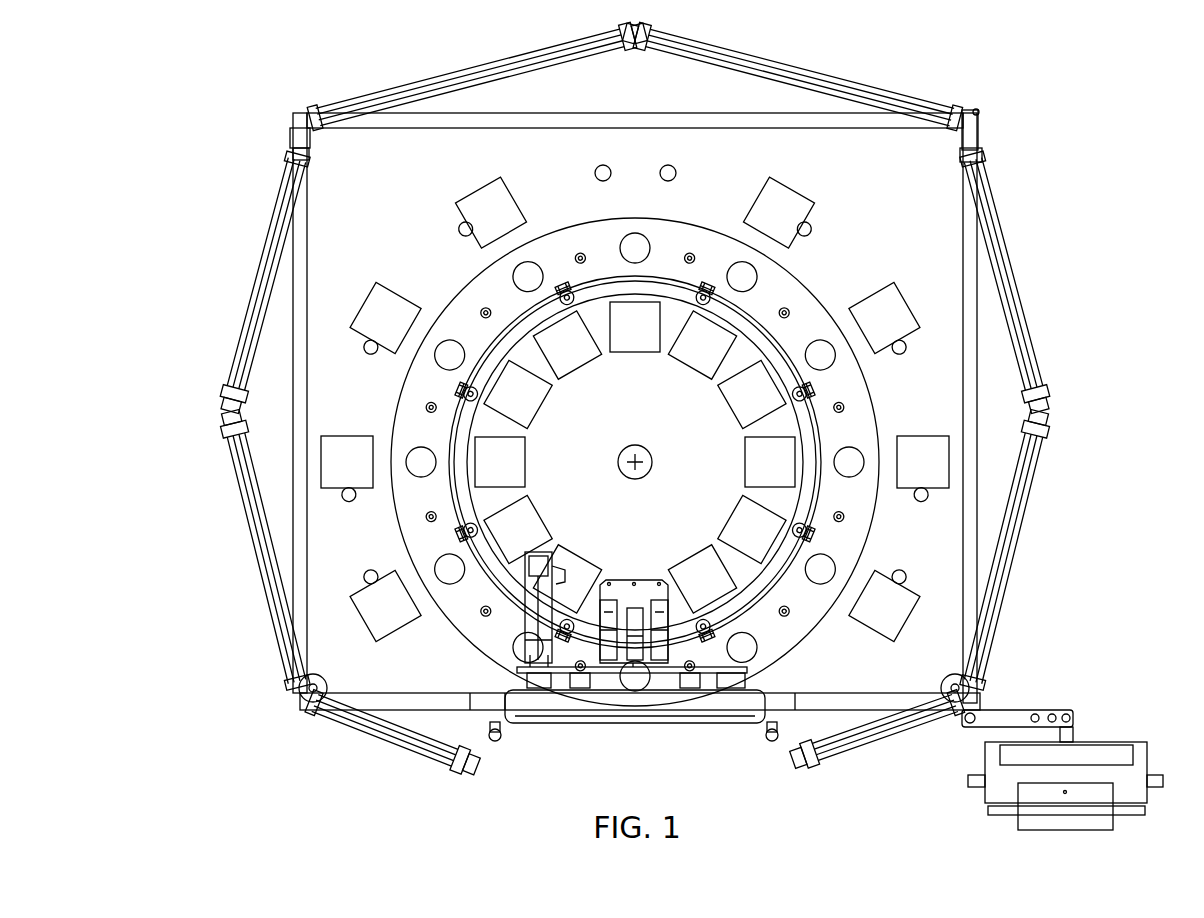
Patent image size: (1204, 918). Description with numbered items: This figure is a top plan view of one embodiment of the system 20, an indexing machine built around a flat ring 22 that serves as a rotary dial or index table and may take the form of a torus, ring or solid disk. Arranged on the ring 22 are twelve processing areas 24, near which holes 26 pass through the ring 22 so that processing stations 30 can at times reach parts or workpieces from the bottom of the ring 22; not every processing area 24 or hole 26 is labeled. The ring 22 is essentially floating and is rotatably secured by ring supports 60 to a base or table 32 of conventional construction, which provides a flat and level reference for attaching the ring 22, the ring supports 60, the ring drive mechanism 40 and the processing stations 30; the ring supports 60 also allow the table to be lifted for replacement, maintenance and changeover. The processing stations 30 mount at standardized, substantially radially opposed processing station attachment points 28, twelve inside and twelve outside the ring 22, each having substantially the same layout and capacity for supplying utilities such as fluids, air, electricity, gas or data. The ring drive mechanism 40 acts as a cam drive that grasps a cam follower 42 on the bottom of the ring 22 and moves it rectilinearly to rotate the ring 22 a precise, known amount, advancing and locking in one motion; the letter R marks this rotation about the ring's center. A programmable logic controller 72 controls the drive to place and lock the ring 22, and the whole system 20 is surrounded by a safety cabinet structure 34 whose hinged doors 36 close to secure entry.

The system 20 is at (245, 97).
The flat ring 22 is at (460, 637).
The processing areas 24 is at (834, 366).
The holes 26 is at (844, 473).
The processing station attachment points 28 is at (376, 298).
The processing stations 30 is at (876, 304).
The base or table 32 is at (415, 135).
The safety cabinet structure 34 is at (970, 108).
The hinged doors 36 is at (537, 60).
The ring drive mechanism 40 is at (640, 568).
The cam follower 42 is at (788, 618).
The ring supports 60 is at (700, 291).
The programmable logic controller 72 is at (1122, 742).
The axis of rotation R is at (655, 447).